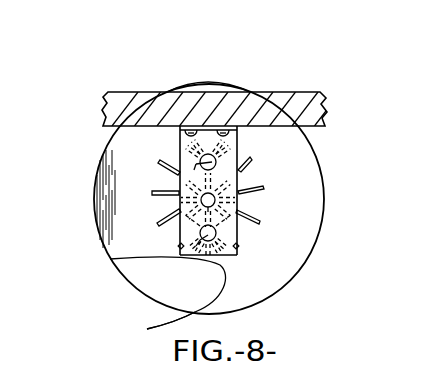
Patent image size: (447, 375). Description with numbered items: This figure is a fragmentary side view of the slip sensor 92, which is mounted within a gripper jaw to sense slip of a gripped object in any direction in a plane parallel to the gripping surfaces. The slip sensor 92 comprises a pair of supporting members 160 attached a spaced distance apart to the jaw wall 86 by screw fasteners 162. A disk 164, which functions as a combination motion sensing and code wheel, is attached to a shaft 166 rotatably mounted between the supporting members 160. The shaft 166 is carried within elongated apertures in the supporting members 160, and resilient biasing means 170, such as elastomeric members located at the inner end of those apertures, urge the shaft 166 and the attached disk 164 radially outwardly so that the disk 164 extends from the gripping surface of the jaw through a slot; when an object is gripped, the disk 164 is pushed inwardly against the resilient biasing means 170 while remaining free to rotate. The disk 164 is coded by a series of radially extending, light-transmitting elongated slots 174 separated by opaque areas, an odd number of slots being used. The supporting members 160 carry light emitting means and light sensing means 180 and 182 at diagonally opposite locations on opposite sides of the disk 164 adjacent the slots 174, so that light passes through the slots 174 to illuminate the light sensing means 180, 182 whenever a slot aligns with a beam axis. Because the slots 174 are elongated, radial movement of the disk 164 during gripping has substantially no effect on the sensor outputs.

The jaw wall 86 is at (131, 93).
The slip sensor 92 is at (194, 80).
The supporting member 160 is at (110, 259).
The screw fastener 162 is at (237, 134).
The disk 164 is at (97, 200).
The shaft 166 is at (200, 198).
The resilient biasing means 170 is at (213, 208).
The elongated slot 174 is at (251, 158).
The light sensing means 180 is at (180, 131).
The light sensing means 182 is at (152, 327).